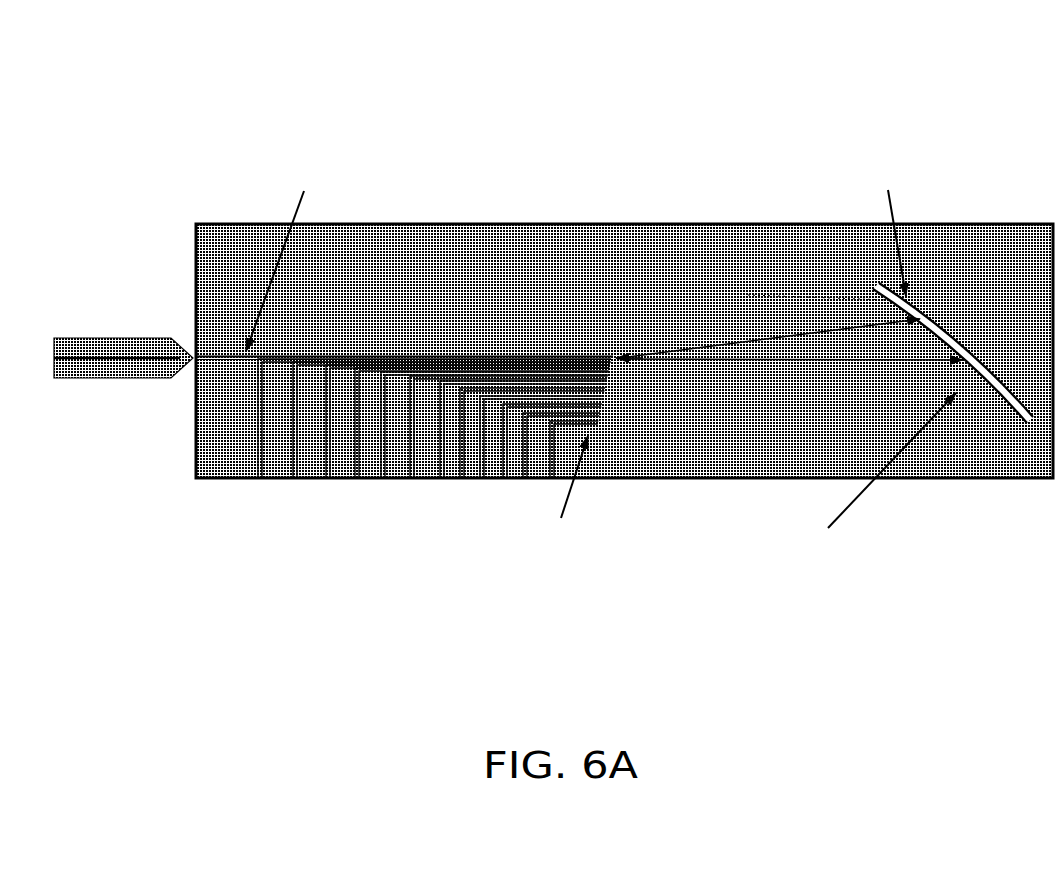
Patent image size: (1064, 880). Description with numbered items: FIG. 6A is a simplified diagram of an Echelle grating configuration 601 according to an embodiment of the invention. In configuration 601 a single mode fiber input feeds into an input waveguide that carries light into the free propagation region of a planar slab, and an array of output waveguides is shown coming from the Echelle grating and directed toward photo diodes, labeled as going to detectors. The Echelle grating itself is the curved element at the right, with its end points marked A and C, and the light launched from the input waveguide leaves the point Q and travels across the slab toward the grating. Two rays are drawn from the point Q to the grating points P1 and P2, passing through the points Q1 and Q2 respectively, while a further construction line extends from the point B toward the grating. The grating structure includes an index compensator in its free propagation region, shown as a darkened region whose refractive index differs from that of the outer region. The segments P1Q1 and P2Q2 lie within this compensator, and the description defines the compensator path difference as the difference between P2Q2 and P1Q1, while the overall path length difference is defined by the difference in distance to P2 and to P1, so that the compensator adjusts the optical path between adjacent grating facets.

The configuration 601 is at (553, 330).
The grating point P1 is at (810, 349).
The grating point P2 is at (785, 324).
The input/output focal point Q is at (624, 343).
The point Q1 is at (918, 380).
The point Q2 is at (830, 315).
The grating end point A is at (1019, 436).
The point B is at (803, 291).
The grating end point C is at (867, 277).